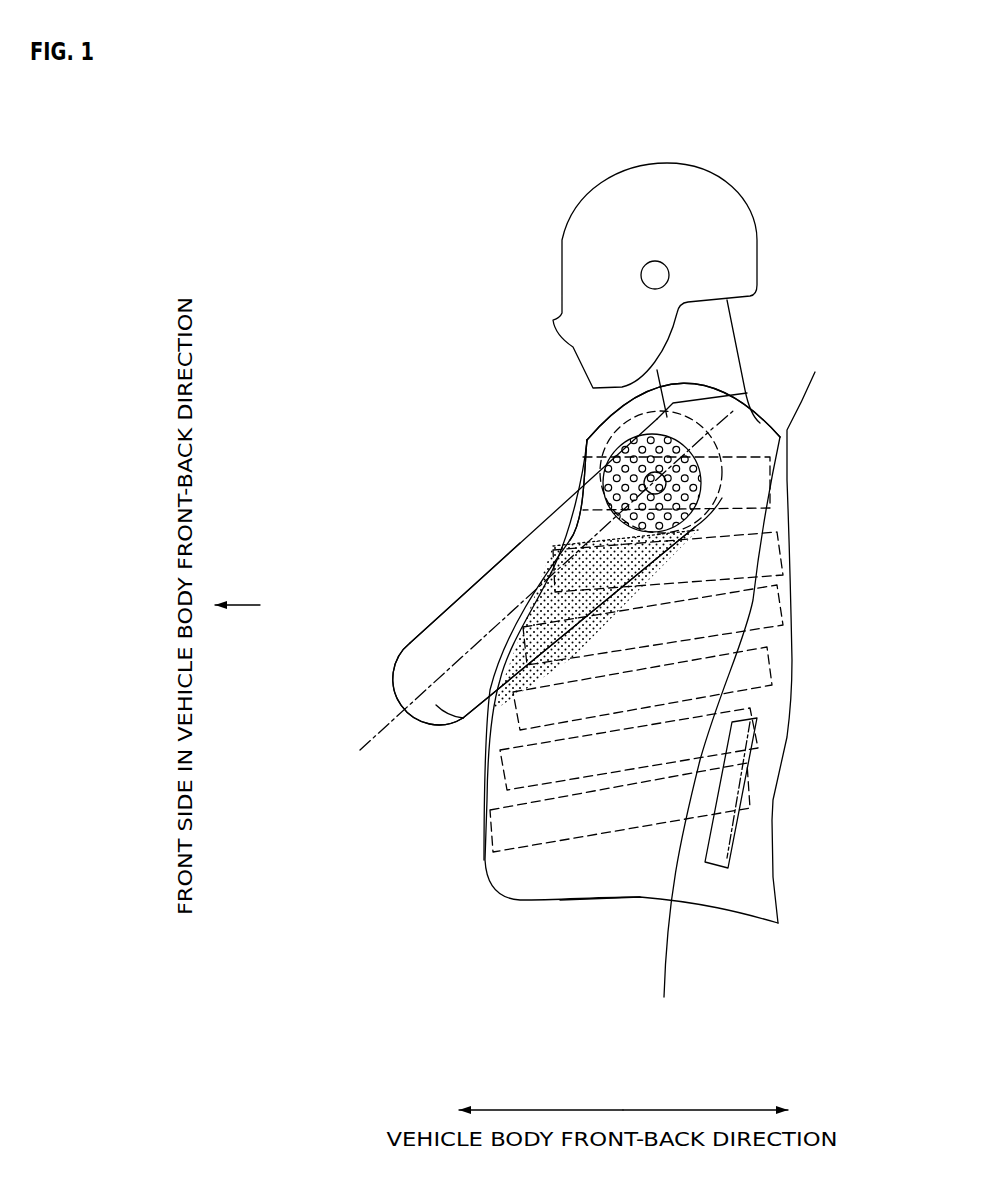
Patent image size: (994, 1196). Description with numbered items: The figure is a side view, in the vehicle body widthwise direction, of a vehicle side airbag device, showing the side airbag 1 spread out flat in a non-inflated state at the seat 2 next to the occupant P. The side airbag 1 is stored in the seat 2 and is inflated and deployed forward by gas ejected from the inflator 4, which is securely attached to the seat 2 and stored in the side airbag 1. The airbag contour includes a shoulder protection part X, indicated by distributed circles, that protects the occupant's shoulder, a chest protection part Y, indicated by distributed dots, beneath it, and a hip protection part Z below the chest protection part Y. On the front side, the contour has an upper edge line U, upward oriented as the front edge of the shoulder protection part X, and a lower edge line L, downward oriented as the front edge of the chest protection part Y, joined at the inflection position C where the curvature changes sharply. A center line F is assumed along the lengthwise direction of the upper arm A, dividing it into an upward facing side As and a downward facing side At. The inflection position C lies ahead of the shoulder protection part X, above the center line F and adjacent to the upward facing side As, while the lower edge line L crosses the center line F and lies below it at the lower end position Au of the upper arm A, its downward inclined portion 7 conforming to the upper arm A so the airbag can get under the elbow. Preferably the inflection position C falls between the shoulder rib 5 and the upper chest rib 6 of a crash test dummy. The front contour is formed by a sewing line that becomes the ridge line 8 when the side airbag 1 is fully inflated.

The occupant P is at (765, 184).
The seat 2 is at (815, 372).
The side airbag 1 is at (475, 930).
The inflection position C is at (580, 526).
The ridge line 8 is at (574, 474).
The upper edge line U is at (583, 427).
The shoulder protection part X is at (708, 417).
The upper arm A is at (503, 546).
The lower edge line L is at (524, 586).
The upward facing side As is at (445, 630).
The lower end position Au is at (418, 682).
The downward facing side At is at (452, 700).
The center line F is at (378, 735).
The downward inclined portion 7 is at (543, 560).
The shoulder rib 5 is at (758, 473).
The upper chest rib 6 is at (768, 553).
The inflator 4 is at (737, 857).
The chest protection part Y is at (568, 663).
The hip protection part Z is at (599, 882).